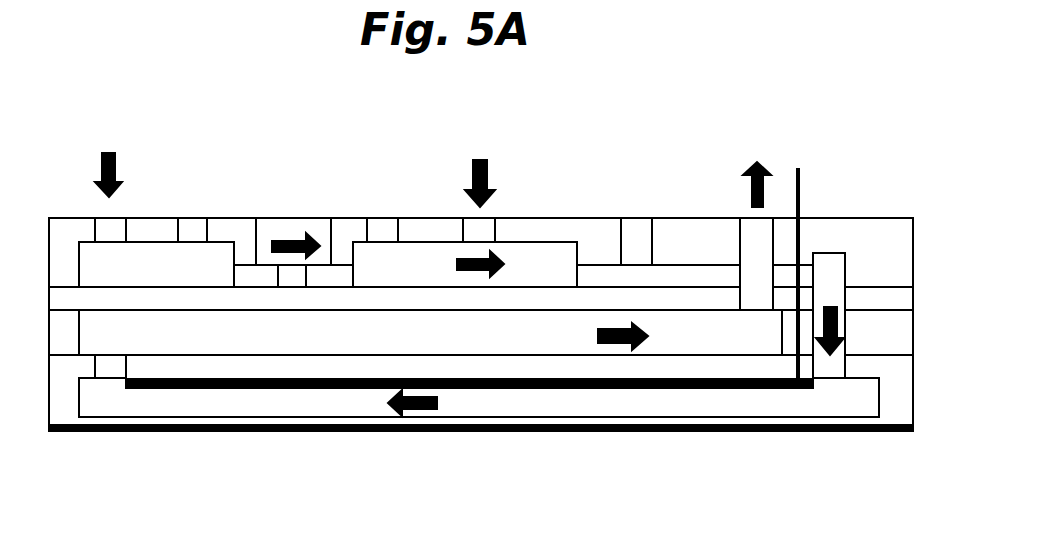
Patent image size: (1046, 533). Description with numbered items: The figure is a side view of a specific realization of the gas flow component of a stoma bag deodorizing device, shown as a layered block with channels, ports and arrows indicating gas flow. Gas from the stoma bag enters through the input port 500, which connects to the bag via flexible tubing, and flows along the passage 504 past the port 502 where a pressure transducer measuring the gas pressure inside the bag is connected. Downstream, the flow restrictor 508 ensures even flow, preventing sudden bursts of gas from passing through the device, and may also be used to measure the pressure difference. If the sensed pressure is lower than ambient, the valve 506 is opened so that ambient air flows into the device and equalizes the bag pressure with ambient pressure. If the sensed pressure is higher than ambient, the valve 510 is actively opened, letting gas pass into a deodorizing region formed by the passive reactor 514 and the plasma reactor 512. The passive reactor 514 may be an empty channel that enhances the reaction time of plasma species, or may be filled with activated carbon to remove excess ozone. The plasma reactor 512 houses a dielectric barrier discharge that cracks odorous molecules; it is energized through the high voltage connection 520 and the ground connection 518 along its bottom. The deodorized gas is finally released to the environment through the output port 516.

The input port 500 is at (100, 227).
The port 502 is at (193, 228).
The passage 504 is at (177, 277).
The valve 506 is at (473, 227).
The flow restrictor 508 is at (295, 228).
The valve 510 is at (628, 228).
The plasma reactor 512 is at (267, 415).
The passive reactor 514 is at (247, 343).
The output port 516 is at (748, 230).
The ground connection 518 is at (698, 432).
The high voltage connection 520 is at (798, 182).